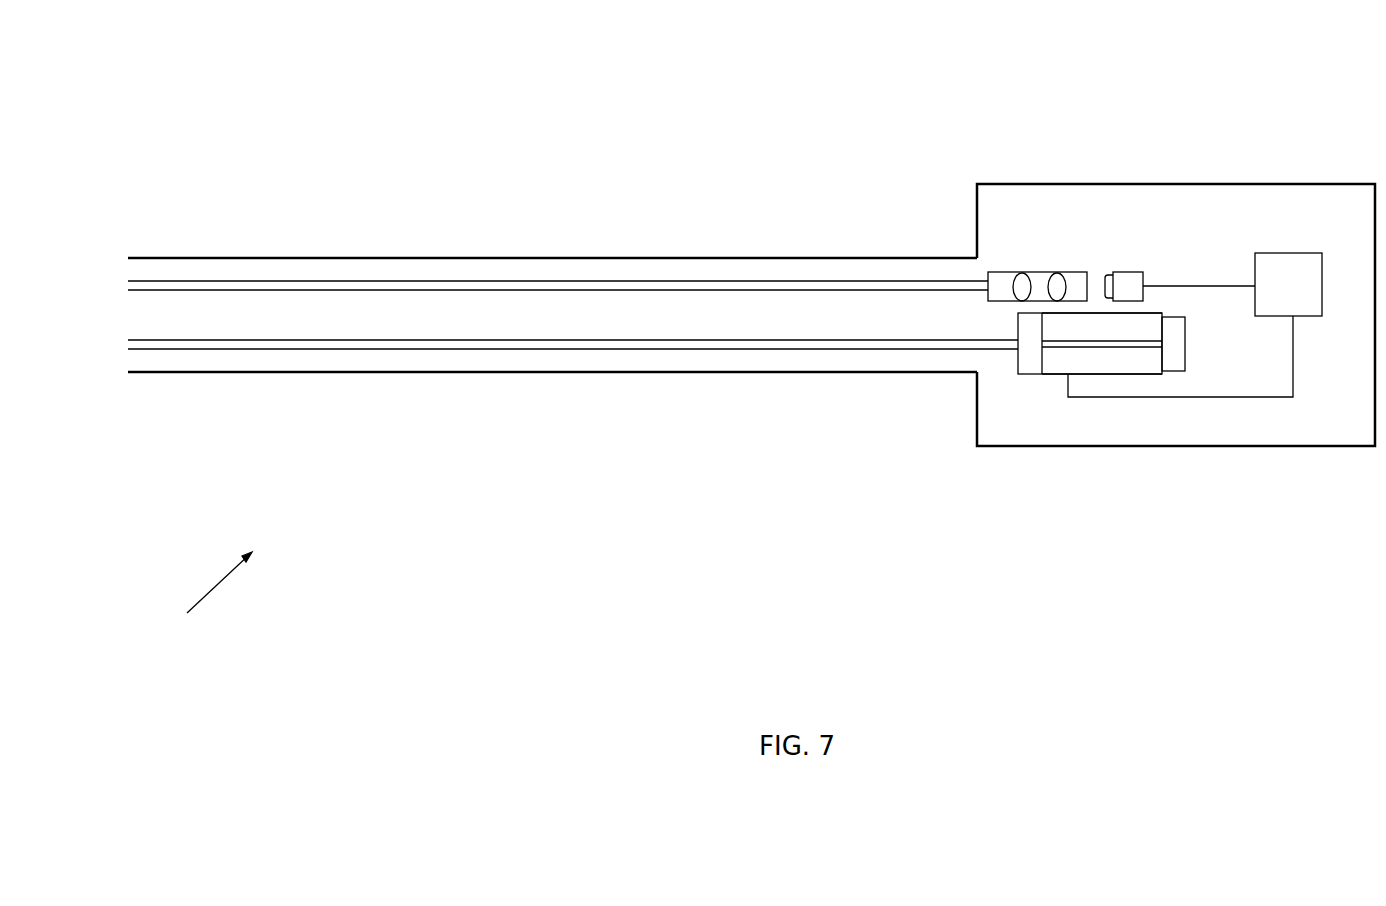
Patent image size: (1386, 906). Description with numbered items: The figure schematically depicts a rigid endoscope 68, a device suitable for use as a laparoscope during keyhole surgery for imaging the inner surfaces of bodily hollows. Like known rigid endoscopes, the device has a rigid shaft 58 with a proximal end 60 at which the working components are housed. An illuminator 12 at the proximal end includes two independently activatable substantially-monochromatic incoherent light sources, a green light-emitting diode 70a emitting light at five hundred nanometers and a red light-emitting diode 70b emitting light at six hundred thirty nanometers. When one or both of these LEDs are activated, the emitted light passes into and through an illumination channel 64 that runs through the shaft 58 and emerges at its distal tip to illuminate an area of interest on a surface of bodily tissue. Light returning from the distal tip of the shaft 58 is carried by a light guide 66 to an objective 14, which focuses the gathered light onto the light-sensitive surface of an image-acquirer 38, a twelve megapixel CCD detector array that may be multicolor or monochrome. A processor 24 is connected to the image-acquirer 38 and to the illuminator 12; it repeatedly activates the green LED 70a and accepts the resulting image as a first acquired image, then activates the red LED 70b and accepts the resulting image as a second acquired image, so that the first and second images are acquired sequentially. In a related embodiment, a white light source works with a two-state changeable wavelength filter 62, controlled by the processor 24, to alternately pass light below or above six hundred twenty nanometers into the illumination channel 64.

The illuminator 12 is at (1173, 371).
The objective 14 is at (1042, 272).
The processor 24 is at (1285, 253).
The image-acquirer 38 is at (1130, 272).
The rigid shaft 58 is at (215, 257).
The proximal end 60 is at (1012, 568).
The changeable wavelength filter 62 is at (1031, 374).
The illumination channel 64 is at (690, 343).
The light guide 66 is at (670, 281).
The rigid endoscope 68 is at (208, 598).
The light-emitting diode 70a is at (1105, 364).
The light-emitting diode 70b is at (1155, 329).